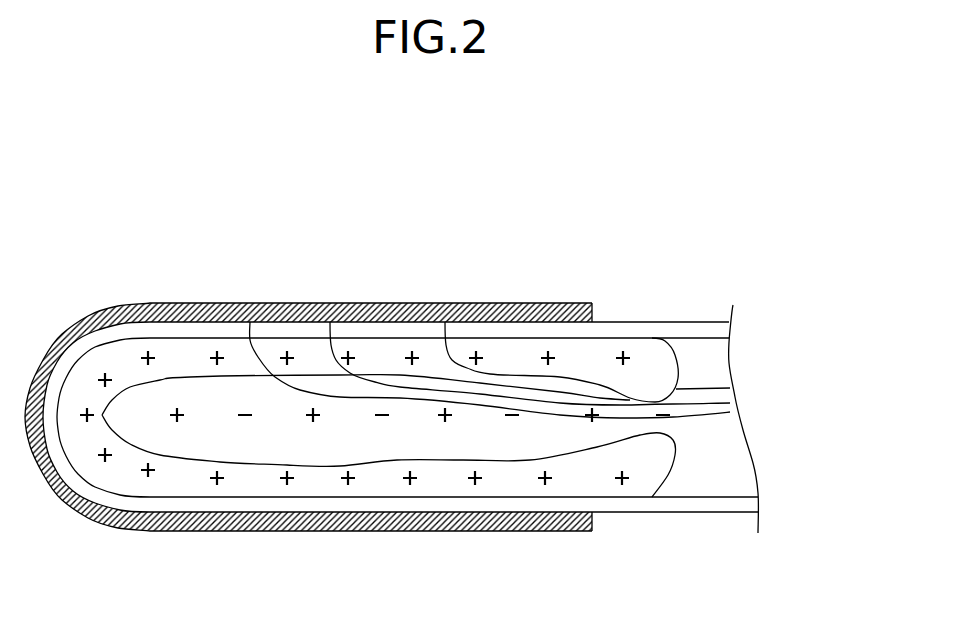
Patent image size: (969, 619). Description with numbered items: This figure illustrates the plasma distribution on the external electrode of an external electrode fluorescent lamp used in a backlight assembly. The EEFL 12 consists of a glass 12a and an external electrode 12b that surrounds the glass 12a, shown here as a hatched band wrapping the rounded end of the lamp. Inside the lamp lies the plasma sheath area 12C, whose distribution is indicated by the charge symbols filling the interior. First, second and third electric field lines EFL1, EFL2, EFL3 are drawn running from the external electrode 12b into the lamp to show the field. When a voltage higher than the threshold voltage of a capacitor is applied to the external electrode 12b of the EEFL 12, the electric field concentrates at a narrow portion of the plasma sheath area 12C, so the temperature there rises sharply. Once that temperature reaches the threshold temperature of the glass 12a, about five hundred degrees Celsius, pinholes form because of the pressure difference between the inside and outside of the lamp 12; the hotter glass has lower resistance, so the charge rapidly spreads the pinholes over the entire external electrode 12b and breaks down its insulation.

The EEFL 12 is at (706, 304).
The glass 12a is at (653, 320).
The external electrode 12b is at (555, 296).
The plasma sheath area 12C is at (178, 472).
The first electric field line EFL1 is at (460, 355).
The second electric field line EFL2 is at (337, 355).
The third electric field line EFL3 is at (262, 352).